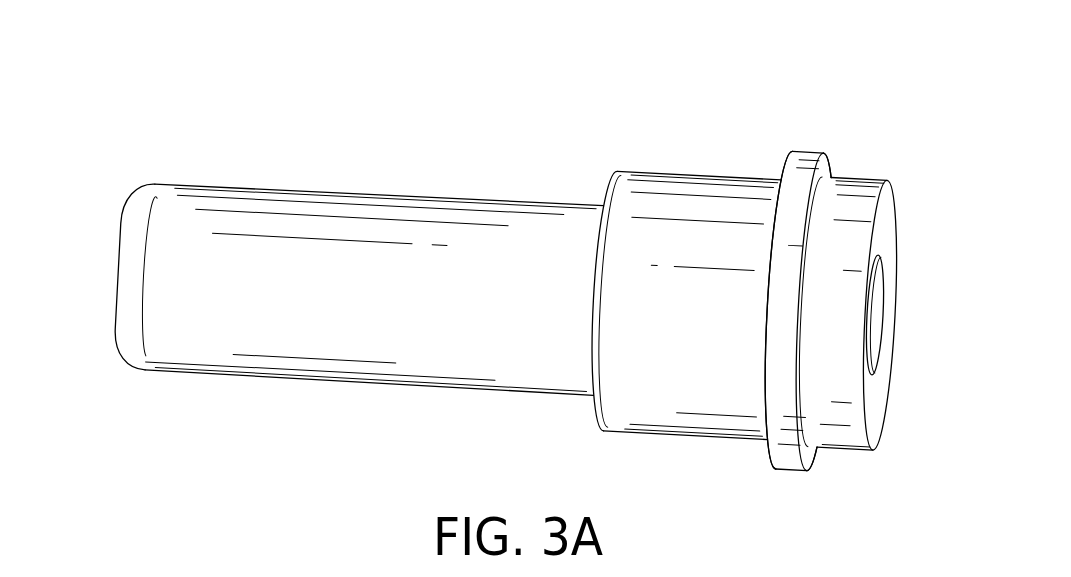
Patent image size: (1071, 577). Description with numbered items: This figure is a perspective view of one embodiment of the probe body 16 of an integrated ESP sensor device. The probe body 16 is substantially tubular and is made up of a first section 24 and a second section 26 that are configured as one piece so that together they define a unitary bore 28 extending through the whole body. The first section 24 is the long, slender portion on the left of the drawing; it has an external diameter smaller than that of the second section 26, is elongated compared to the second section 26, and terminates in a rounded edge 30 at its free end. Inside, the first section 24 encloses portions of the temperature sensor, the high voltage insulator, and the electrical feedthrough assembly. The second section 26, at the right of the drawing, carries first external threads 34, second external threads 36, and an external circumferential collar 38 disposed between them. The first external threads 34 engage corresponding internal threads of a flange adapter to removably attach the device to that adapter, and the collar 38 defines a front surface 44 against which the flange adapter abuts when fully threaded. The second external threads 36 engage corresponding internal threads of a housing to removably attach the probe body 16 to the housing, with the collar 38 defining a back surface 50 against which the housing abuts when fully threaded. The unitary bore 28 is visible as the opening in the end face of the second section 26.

The probe body 16 is at (106, 78).
The first section 24 is at (345, 222).
The second section 26 is at (836, 108).
The unitary bore 28 is at (872, 318).
The rounded edge 30 is at (146, 202).
The first external threads 34 is at (672, 193).
The second external threads 36 is at (868, 183).
The external circumferential collar 38 is at (803, 162).
The front surface 44 is at (783, 163).
The back surface 50 is at (827, 163).